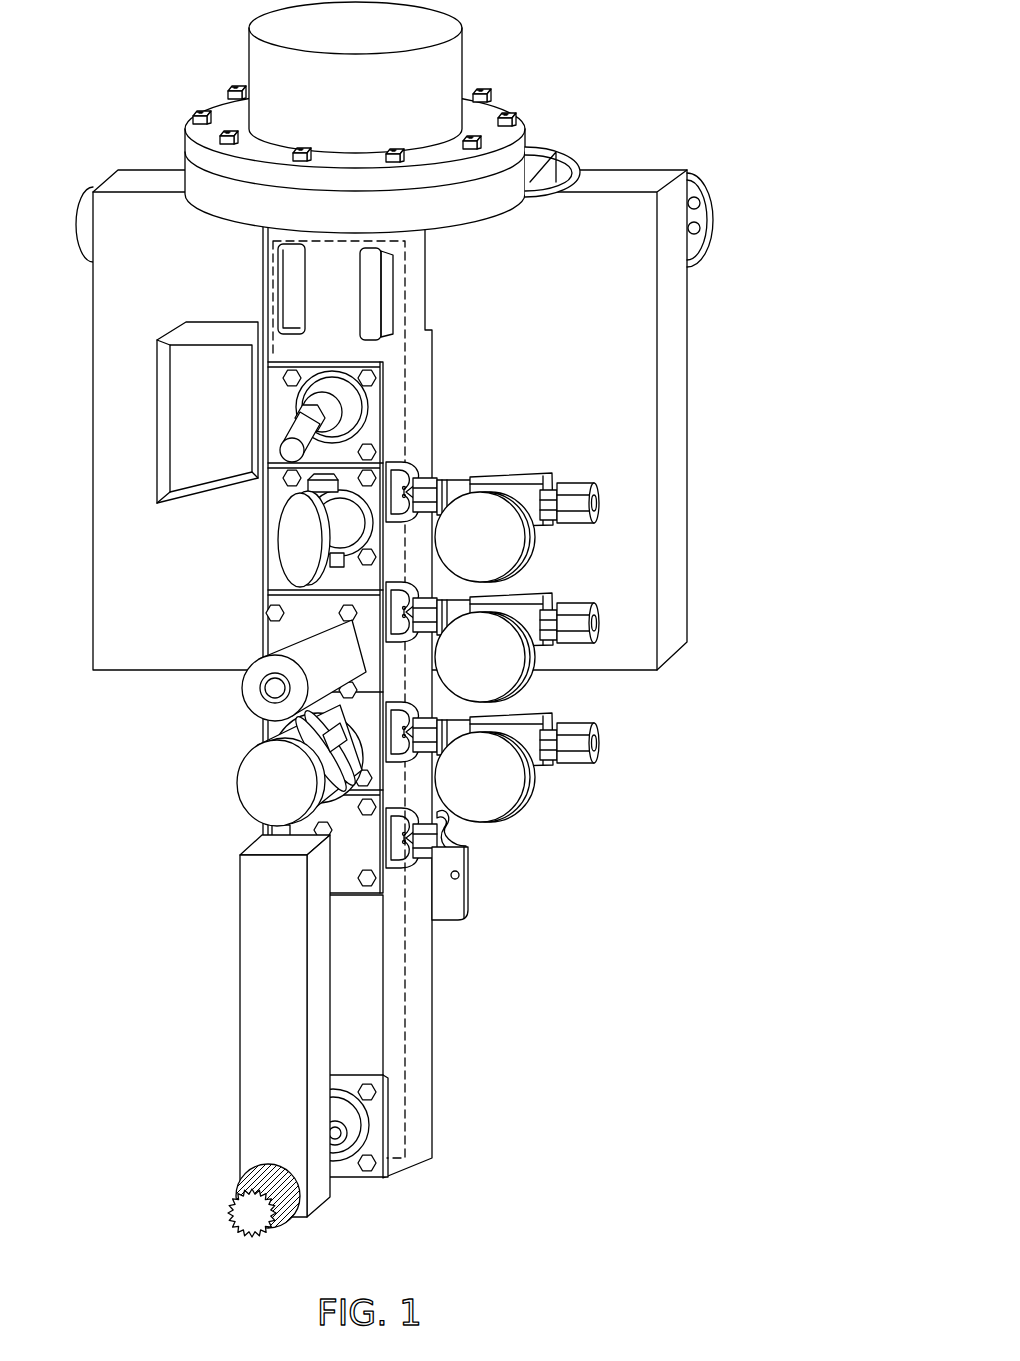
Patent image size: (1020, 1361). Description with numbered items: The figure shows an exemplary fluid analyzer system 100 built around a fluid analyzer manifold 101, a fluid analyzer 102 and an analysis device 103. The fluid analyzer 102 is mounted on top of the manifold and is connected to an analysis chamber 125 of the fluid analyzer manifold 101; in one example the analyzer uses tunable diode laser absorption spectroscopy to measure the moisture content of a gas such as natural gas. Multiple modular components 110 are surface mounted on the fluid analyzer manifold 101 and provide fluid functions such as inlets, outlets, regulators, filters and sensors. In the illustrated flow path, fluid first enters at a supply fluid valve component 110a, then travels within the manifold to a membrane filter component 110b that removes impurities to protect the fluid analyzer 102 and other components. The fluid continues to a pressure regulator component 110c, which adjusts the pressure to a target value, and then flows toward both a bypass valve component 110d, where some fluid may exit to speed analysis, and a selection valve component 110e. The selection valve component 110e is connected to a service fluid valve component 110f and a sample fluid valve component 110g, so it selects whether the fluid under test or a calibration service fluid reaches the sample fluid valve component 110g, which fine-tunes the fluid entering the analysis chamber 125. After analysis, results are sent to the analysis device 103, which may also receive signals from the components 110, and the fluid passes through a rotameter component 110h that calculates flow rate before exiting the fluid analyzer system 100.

The fluid analyzer system 100 is at (636, 99).
The fluid analyzer manifold 101 is at (420, 1037).
The fluid analyzer 102 is at (440, 75).
The analysis device 103 is at (668, 344).
The modular components 110 is at (292, 532).
The supply fluid valve component 110a is at (497, 793).
The membrane filter component 110b is at (267, 787).
The pressure regulator component 110c is at (253, 688).
The bypass valve component 110d is at (495, 672).
The selection valve component 110e is at (298, 566).
The service fluid valve component 110f is at (493, 526).
The sample fluid valve component 110g is at (290, 452).
The rotameter component 110h is at (250, 1082).
The analysis chamber 125 is at (405, 356).